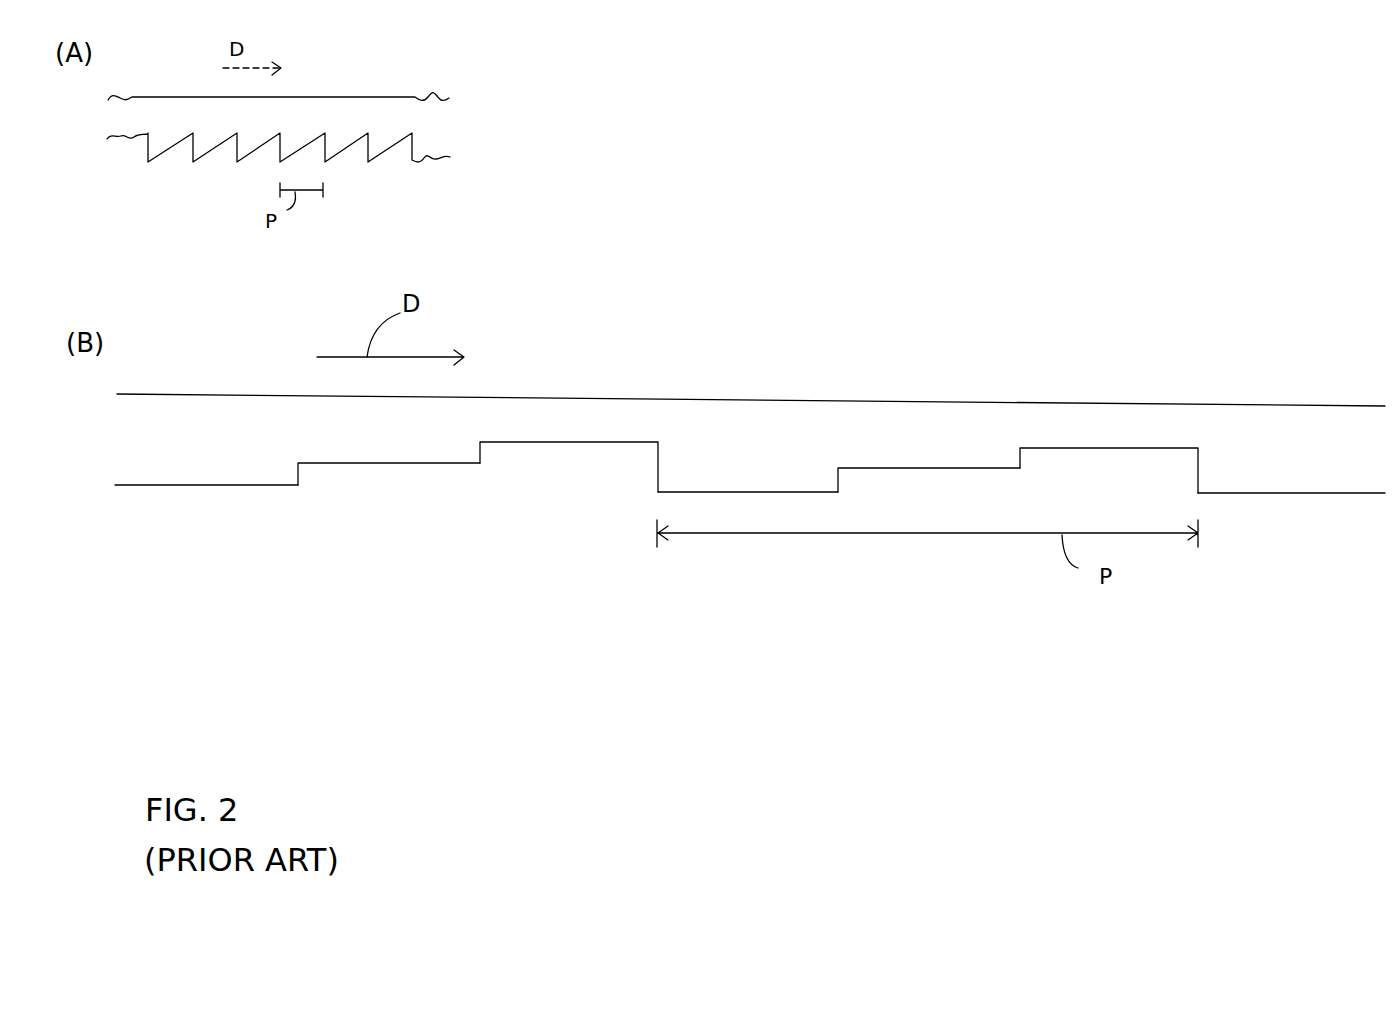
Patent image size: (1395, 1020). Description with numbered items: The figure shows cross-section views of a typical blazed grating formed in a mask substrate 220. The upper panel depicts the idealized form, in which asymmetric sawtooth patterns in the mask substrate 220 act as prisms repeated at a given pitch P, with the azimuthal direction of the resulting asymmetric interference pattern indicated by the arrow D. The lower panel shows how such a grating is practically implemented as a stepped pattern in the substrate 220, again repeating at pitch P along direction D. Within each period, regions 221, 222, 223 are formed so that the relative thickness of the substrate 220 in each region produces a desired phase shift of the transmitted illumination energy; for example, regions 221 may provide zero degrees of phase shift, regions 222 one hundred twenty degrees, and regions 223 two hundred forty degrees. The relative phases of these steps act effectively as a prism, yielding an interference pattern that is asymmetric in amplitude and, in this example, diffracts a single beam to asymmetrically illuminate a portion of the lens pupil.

The mask substrate 220 is at (407, 118).
The regions providing 0° phase shift 221 is at (212, 487).
The regions providing 120° phase shift 222 is at (398, 467).
The regions providing 240° phase shift 223 is at (575, 445).